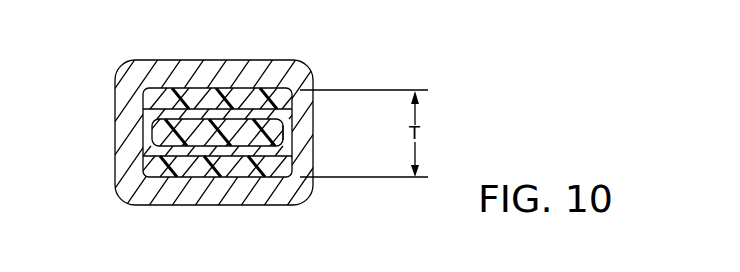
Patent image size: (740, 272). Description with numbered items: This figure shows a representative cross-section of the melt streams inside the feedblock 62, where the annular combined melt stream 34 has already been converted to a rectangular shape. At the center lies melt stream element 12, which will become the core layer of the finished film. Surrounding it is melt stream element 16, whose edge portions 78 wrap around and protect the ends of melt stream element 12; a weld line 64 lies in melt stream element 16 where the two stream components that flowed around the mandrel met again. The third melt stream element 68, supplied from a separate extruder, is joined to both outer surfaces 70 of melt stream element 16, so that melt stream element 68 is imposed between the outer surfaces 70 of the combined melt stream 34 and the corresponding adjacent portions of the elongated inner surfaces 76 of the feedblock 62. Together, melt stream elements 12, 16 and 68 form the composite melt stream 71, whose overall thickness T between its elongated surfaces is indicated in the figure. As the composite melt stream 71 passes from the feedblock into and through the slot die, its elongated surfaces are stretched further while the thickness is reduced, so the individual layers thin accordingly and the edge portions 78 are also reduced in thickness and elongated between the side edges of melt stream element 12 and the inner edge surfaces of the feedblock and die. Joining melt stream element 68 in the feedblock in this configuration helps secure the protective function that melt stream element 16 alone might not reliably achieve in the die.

The melt stream element 12 is at (300, 160).
The melt stream element 16 is at (313, 72).
The combined melt stream 34 is at (294, 116).
The feedblock 62 is at (168, 60).
The weld line 64 is at (142, 126).
The third melt stream element 68 is at (147, 102).
The outer surface 70 is at (263, 77).
The composite melt stream 71 is at (190, 187).
The inner surfaces 76 is at (185, 90).
The edge portions 78 is at (282, 135).